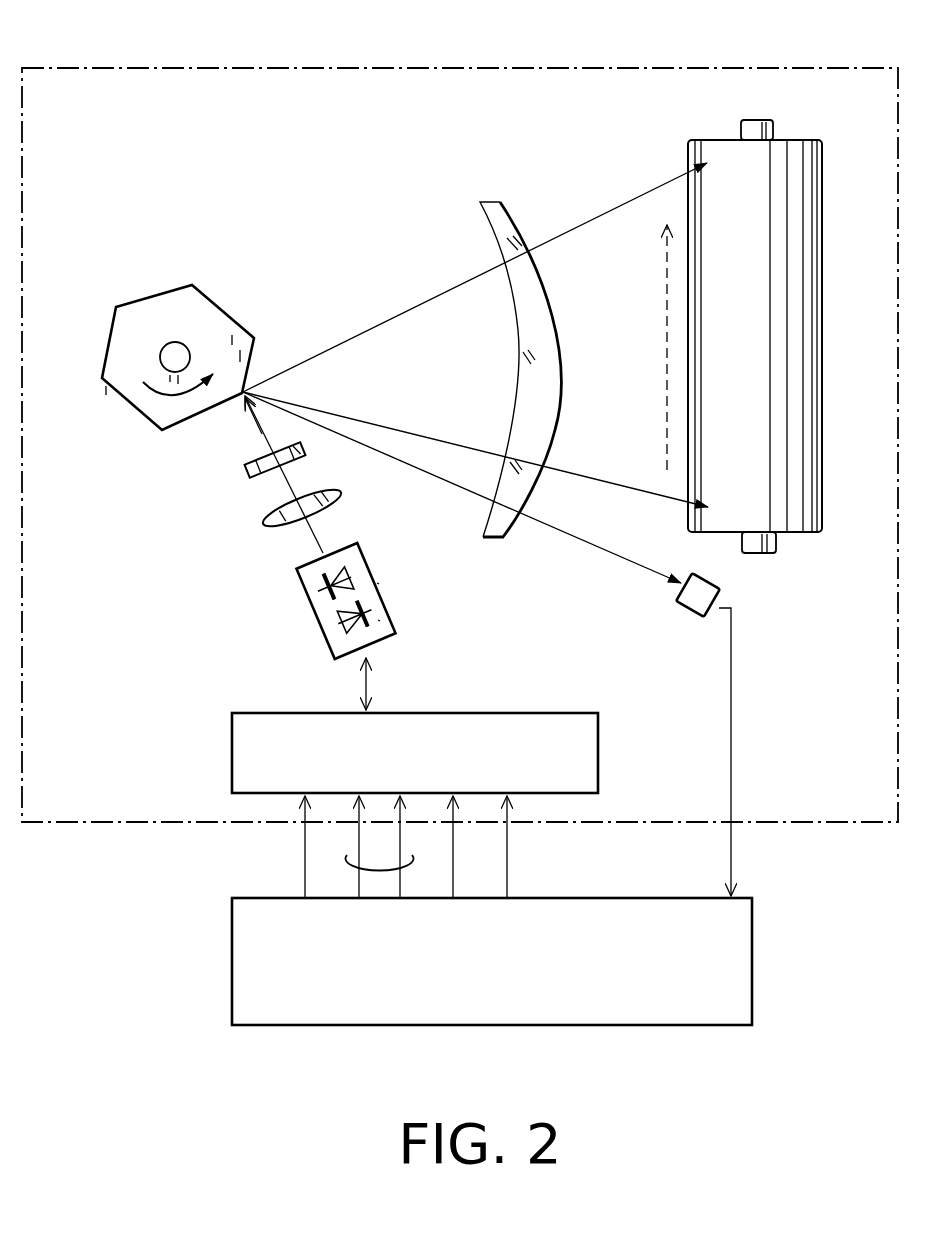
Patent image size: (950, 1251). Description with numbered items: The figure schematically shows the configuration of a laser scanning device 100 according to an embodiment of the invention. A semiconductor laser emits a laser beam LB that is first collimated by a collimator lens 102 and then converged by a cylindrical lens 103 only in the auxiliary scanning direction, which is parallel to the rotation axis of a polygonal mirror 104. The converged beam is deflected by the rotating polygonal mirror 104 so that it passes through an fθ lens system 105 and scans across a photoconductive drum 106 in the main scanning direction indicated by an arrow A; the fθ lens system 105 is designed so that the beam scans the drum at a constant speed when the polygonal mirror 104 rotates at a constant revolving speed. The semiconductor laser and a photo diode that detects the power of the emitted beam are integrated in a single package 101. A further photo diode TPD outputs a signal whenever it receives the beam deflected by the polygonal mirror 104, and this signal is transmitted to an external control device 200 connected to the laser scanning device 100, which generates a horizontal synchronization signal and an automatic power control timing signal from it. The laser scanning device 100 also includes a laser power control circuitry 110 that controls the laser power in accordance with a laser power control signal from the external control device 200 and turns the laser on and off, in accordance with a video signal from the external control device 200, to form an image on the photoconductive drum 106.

The laser scanning device 100 is at (379, 58).
The single package 101 is at (312, 601).
The collimator lens 102 is at (265, 524).
The cylindrical lens 103 is at (249, 463).
The polygonal mirror 104 is at (150, 317).
The fθ lens system 105 is at (498, 226).
The photoconductive drum 106 is at (717, 152).
The laser power control circuitry 110 is at (543, 712).
The external control device 200 is at (232, 967).
The laser beam LB is at (317, 537).
The photo diode TPD is at (695, 597).
The arrow A is at (667, 356).